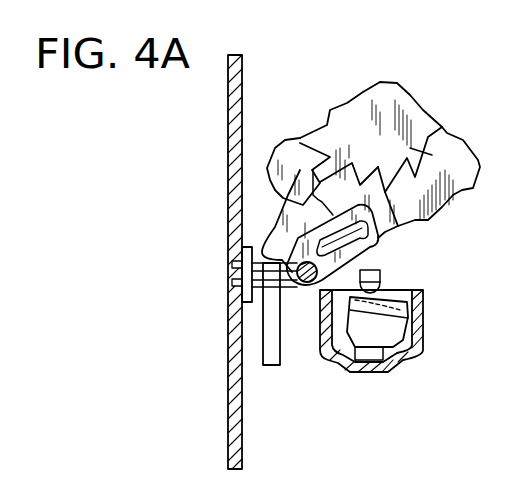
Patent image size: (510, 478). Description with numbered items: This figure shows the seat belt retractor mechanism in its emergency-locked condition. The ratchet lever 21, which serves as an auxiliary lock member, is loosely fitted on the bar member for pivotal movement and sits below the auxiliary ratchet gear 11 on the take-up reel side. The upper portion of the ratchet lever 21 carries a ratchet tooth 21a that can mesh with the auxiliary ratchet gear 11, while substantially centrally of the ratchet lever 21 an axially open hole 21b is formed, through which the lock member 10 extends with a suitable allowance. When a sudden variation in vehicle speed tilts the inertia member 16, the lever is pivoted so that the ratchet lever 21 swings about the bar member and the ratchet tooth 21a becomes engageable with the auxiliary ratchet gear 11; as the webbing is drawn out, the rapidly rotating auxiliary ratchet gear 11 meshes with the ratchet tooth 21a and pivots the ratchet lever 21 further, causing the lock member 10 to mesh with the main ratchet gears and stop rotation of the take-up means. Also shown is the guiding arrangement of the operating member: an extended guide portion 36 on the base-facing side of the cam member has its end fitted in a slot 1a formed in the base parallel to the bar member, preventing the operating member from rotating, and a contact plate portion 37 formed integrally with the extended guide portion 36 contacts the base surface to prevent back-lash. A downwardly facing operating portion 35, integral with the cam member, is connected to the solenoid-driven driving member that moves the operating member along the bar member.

The slot 1a is at (232, 273).
The lock member 10 is at (372, 243).
The auxiliary ratchet gear 11 is at (428, 137).
The inertia member 16 is at (397, 327).
The ratchet lever 21 is at (323, 160).
The ratchet tooth 21a is at (348, 163).
The hole 21b is at (298, 217).
The operating portion 35 is at (280, 353).
The extended guide portion 36 is at (230, 263).
The contact plate portion 37 is at (250, 297).